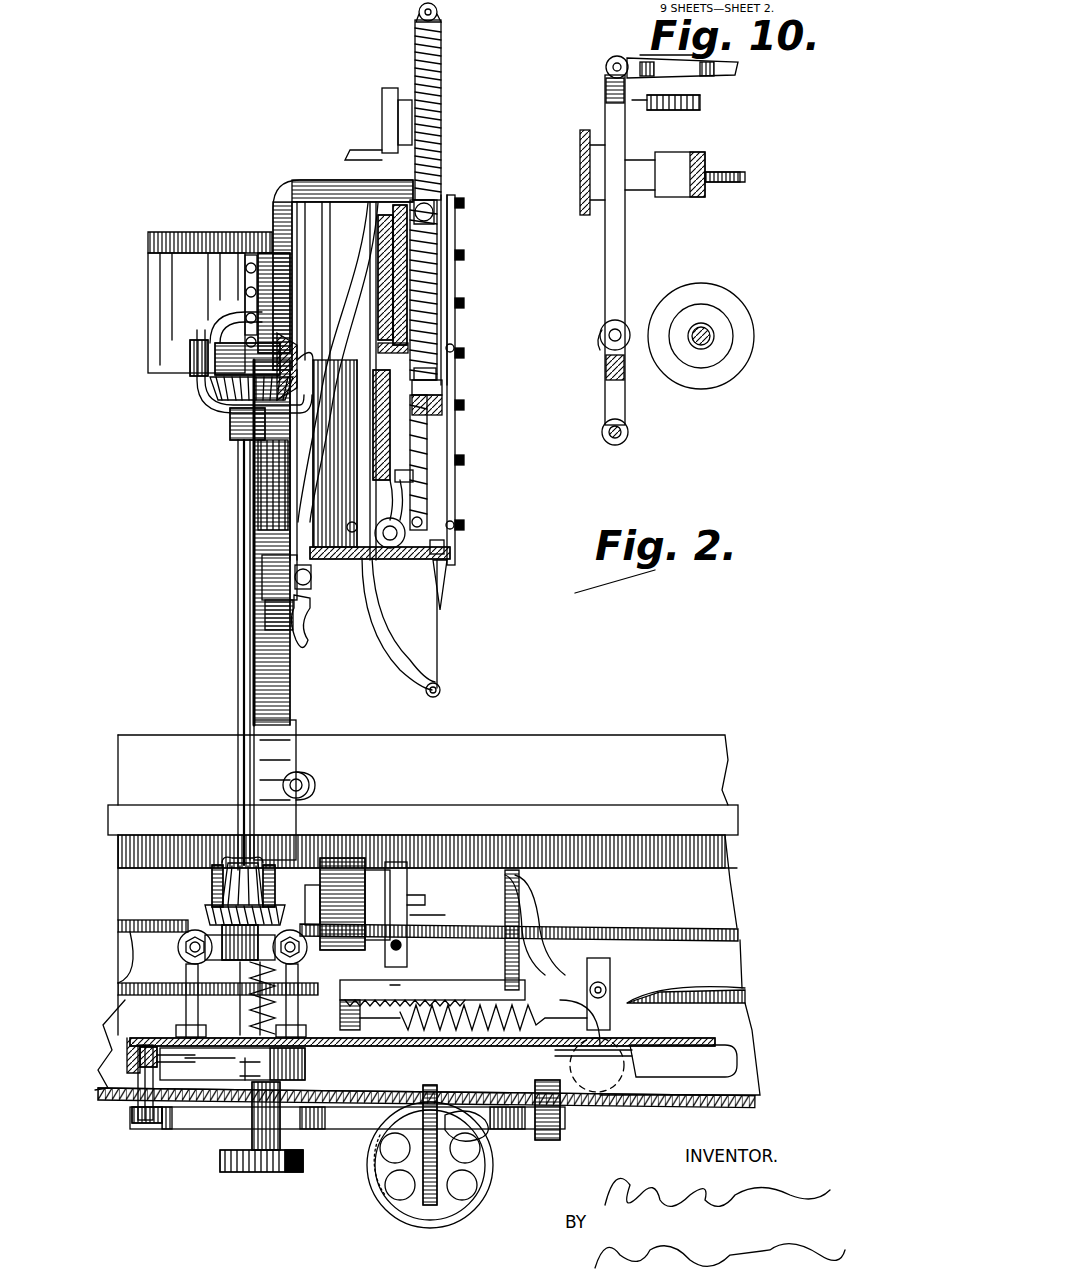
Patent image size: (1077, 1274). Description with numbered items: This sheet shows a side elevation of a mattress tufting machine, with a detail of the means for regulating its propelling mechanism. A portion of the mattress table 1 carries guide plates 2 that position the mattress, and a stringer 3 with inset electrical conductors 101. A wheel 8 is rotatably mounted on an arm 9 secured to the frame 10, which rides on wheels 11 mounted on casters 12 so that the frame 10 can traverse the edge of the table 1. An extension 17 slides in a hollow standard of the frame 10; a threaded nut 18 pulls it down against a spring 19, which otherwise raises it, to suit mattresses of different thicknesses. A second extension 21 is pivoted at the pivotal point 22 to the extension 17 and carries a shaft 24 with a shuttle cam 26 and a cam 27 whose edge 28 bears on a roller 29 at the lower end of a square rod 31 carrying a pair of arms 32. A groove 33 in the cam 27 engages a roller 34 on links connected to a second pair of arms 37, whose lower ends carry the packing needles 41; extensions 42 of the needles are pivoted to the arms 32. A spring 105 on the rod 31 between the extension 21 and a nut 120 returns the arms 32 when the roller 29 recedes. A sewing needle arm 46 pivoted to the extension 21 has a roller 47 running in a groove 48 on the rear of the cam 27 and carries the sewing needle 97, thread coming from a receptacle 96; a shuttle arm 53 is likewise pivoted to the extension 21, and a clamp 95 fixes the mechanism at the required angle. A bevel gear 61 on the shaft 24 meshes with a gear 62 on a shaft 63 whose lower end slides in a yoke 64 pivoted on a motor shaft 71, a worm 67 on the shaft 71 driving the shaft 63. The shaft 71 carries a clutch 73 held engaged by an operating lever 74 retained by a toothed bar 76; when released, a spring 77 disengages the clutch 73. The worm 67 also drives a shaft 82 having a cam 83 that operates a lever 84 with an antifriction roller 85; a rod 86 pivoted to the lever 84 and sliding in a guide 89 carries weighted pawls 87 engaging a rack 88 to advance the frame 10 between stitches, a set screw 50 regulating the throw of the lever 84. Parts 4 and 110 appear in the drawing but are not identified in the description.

In FIG. 2, the mattress table 1 is at (705, 820).
In FIG. 2, the guide plates 2 is at (423, 770).
In FIG. 2, the stringer 3 is at (690, 880).
In FIG. 2, the guide band 4 is at (130, 920).
In FIG. 2, the wheel 8 is at (388, 1198).
In FIG. 2, the arm 9 is at (420, 1212).
In FIG. 10, the frame 10 is at (580, 176).
In FIG. 2, the frame 10 is at (130, 1040).
In FIG. 2, the wheels 11 is at (615, 1032).
In FIG. 2, the casters 12 is at (540, 910).
In FIG. 2, the extension 17 is at (278, 712).
In FIG. 2, the threaded nut 18 is at (252, 1132).
In FIG. 2, the spring 19 is at (250, 990).
In FIG. 2, the second extension 21 is at (268, 185).
In FIG. 2, the pivotal point 22 is at (298, 577).
In FIG. 2, the shaft 24 is at (442, 338).
In FIG. 2, the shuttle cam 26 is at (245, 460).
In FIG. 2, the cam 27 is at (440, 300).
In FIG. 2, the cam edge 28 is at (432, 205).
In FIG. 2, the roller 29 is at (432, 452).
In FIG. 2, the square rod 31 is at (430, 380).
In FIG. 2, the pair of arms 32 is at (449, 278).
In FIG. 2, the groove 33 is at (440, 250).
In FIG. 2, the roller 34 is at (420, 418).
In FIG. 2, the arms or levers 37 is at (452, 348).
In FIG. 2, the packing needles 41 is at (442, 588).
In FIG. 2, the extensions 42 is at (455, 547).
In FIG. 2, the sewing needle arm 46 is at (382, 212).
In FIG. 2, the roller 47 is at (268, 472).
In FIG. 2, the groove 48 is at (378, 250).
In FIG. 10, the set screw 50 is at (740, 170).
In FIG. 2, the shuttle arm 53 is at (378, 138).
In FIG. 2, the bevel gear 61 is at (205, 377).
In FIG. 2, the bevel gear 62 is at (225, 402).
In FIG. 2, the shaft 63 is at (236, 640).
In FIG. 2, the yoke 64 is at (300, 850).
In FIG. 2, the worm 67 is at (212, 882).
In FIG. 2, the shaft 71 is at (420, 912).
In FIG. 2, the clutch 73 is at (370, 860).
In FIG. 2, the operating lever 74 is at (398, 960).
In FIG. 2, the toothed bar 76 is at (465, 980).
In FIG. 2, the spring 77 is at (522, 1000).
In FIG. 10, the shaft 82 is at (708, 330).
In FIG. 2, the shaft 82 is at (240, 972).
In FIG. 10, the cam 83 is at (750, 338).
In FIG. 2, the cam 83 is at (306, 1070).
In FIG. 10, the lever 84 is at (615, 268).
In FIG. 2, the lever 84 is at (120, 1082).
In FIG. 10, the antifriction roller 85 is at (600, 345).
In FIG. 2, the antifriction roller 85 is at (140, 1062).
In FIG. 10, the rod 86 is at (700, 78).
In FIG. 2, the rod 86 is at (172, 1120).
In FIG. 2, the weighted pawls 87 is at (472, 1122).
In FIG. 2, the rack 88 is at (592, 1105).
In FIG. 2, the guide 89 is at (560, 1132).
In FIG. 2, the clamp 95 is at (310, 600).
In FIG. 2, the receptacle 96 is at (165, 275).
In FIG. 2, the sewing needle 97 is at (440, 646).
In FIG. 2, the electrical conductors 101 is at (128, 988).
In FIG. 2, the spring 105 is at (443, 85).
In FIG. 2, the gear 110 is at (240, 908).
In FIG. 2, the nut 120 is at (437, 14).